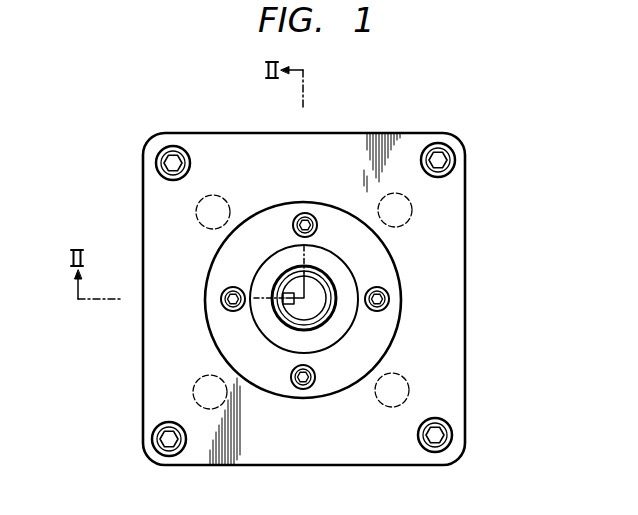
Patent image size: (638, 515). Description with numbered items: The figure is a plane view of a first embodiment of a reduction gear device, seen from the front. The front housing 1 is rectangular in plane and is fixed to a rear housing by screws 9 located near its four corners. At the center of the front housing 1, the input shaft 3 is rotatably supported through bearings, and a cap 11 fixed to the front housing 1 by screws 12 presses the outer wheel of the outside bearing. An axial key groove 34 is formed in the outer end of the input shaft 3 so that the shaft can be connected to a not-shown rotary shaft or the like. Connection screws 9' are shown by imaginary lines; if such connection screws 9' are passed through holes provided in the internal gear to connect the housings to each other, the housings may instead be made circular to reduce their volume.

The front housing 1 is at (455, 320).
The input shaft 3 is at (295, 314).
The screws 9 is at (463, 160).
The connection screws 9' is at (437, 218).
The cap 11 is at (378, 347).
The screws 12 is at (310, 388).
The axial key groove 34 is at (284, 286).